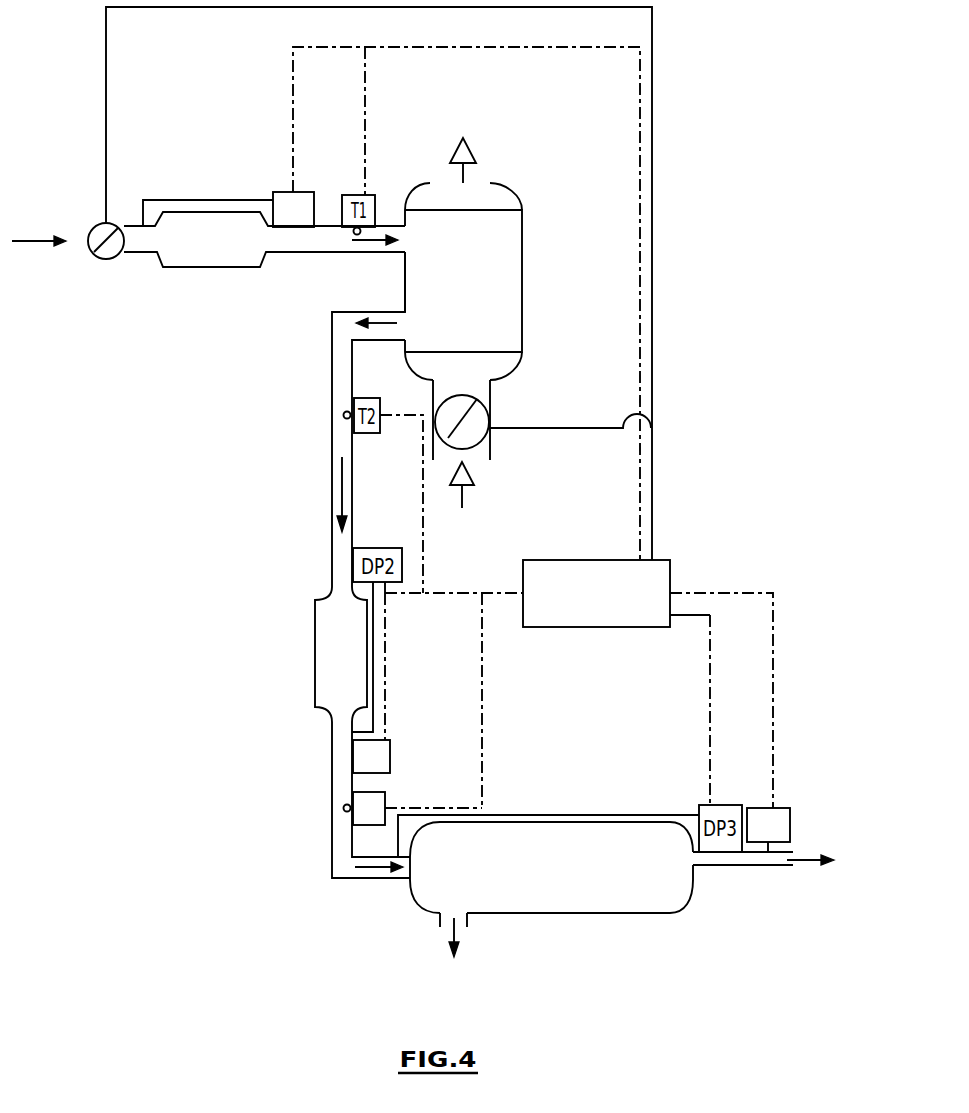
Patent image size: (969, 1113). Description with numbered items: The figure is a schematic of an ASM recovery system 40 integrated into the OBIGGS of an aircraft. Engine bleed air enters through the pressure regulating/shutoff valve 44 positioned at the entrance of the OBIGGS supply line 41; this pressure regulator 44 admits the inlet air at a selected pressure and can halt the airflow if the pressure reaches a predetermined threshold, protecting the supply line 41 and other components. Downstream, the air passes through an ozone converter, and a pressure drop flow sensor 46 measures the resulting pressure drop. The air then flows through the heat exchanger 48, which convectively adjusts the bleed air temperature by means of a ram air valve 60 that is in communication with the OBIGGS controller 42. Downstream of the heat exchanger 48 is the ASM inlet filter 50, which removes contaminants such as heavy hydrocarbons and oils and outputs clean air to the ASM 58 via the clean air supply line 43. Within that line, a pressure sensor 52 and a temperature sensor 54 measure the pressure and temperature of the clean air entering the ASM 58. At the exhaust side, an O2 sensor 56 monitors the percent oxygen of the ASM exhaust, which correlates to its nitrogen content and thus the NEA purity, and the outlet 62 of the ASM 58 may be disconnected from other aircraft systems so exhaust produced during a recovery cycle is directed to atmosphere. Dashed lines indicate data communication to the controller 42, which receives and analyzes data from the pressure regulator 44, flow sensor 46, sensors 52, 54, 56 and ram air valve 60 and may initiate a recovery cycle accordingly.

The ASM recovery system 40 is at (708, 190).
The OBIGGS supply line 41 is at (311, 253).
The OBIGGS controller 42 is at (665, 558).
The clean air supply line 43 is at (332, 855).
The pressure regulating/shutoff valve 44 is at (103, 222).
The pressure drop flow sensor 46 is at (276, 192).
The heat exchanger 48 is at (523, 268).
The ASM inlet filter 50 is at (327, 598).
The pressure sensor 52 is at (391, 756).
The temperature sensor 54 is at (386, 798).
The O2 sensor 56 is at (786, 808).
The ASM 58 is at (663, 897).
The ram air valve 60 is at (492, 440).
The outlet 62 is at (765, 866).